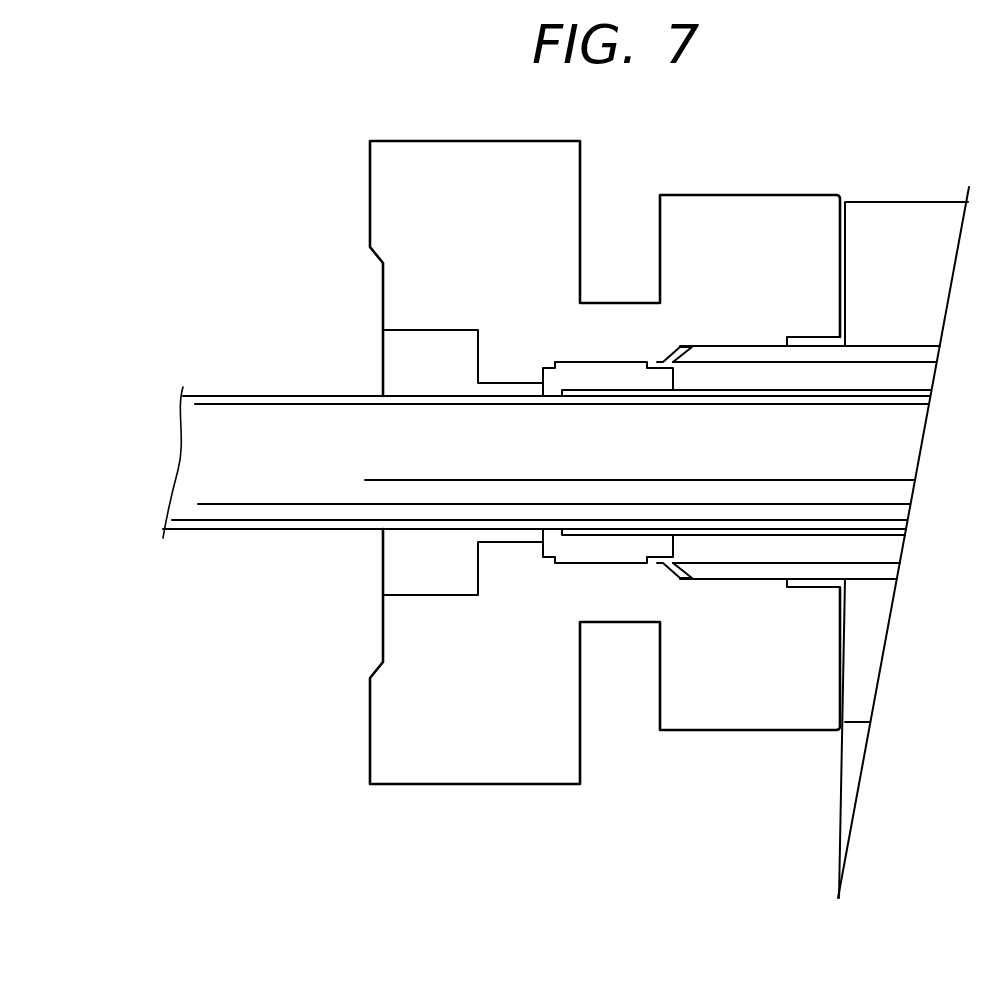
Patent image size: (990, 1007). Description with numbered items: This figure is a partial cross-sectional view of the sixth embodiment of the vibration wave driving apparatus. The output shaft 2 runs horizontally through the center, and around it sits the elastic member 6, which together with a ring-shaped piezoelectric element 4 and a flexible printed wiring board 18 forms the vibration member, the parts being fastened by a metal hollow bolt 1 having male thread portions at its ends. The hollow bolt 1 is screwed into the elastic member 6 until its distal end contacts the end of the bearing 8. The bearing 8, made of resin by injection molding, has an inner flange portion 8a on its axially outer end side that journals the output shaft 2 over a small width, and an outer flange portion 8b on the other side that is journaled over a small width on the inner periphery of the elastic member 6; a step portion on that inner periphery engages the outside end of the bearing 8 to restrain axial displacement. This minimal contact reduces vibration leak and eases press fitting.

The hollow bolt 1 is at (737, 368).
The output shaft 2 is at (257, 525).
The piezoelectric element 4 is at (872, 208).
The elastic member 6 is at (437, 778).
The bearing 8 is at (600, 375).
The inner flange portion 8a is at (553, 396).
The outer flange portion 8b is at (655, 367).
The flexible printed wiring board 18 is at (840, 813).